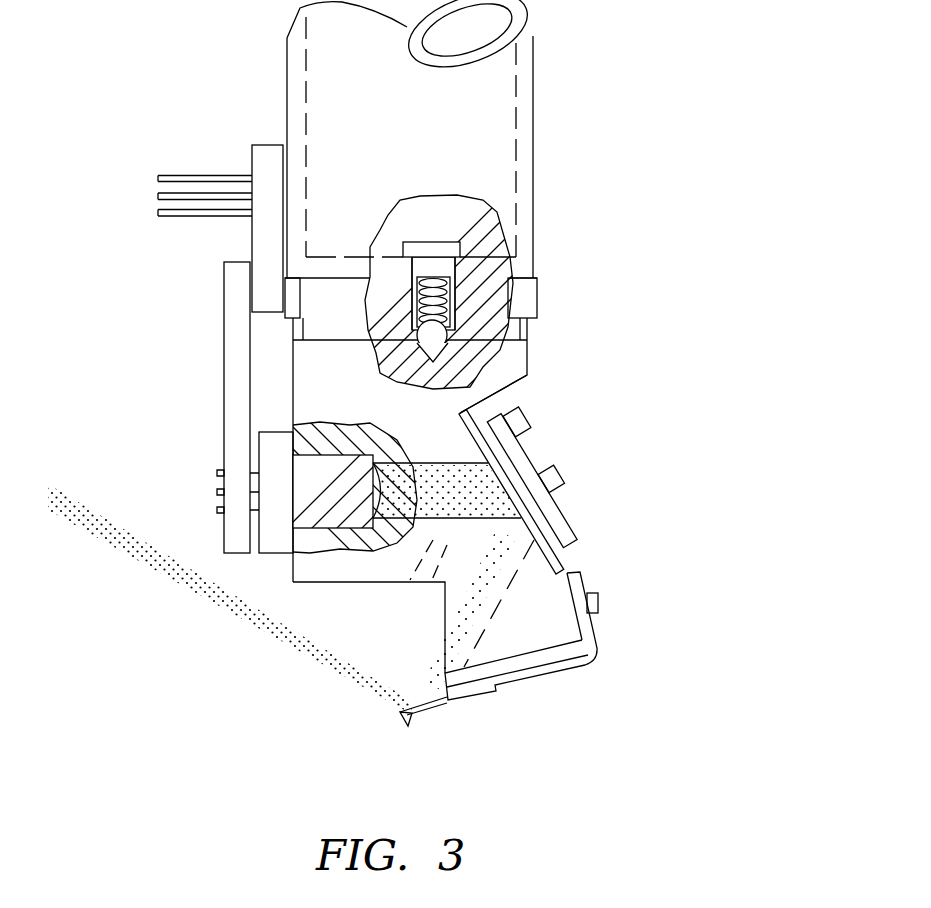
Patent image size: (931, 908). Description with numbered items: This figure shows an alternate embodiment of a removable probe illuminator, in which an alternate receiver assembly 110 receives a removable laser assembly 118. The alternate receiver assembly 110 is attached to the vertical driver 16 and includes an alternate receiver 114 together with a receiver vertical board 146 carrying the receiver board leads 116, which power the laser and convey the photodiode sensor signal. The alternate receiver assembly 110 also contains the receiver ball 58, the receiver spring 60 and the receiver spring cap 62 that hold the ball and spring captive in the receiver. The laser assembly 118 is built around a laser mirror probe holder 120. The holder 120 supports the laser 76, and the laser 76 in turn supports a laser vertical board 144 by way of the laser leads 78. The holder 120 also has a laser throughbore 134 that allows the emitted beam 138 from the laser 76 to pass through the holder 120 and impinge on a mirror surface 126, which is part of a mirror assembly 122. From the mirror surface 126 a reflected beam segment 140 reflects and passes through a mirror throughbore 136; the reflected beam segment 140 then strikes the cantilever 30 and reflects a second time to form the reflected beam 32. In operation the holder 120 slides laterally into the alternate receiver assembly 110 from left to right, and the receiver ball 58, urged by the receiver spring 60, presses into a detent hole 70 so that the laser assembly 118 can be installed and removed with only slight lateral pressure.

The vertical driver 16 is at (537, 122).
The cantilever 30 is at (400, 713).
The reflected beam 32 is at (282, 630).
The receiver ball 58 is at (447, 330).
The receiver spring 60 is at (453, 300).
The receiver spring cap 62 is at (467, 250).
The detent hole 70 is at (445, 351).
The laser 76 is at (272, 448).
The laser leads 78 is at (147, 438).
The alternate receiver assembly 110 is at (555, 268).
The alternate receiver 114 is at (537, 284).
The receiver board leads 116 is at (98, 170).
The laser assembly 118 is at (683, 453).
The laser mirror probe holder 120 is at (507, 392).
The mirror assembly 122 is at (588, 528).
The mirror surface 126 is at (552, 522).
The laser throughbore 134 is at (413, 578).
The mirror throughbore 136 is at (492, 617).
The emitted beam 138 is at (467, 492).
The reflected beam segment 140 is at (428, 673).
The laser vertical board 144 is at (224, 279).
The receiver vertical board 146 is at (252, 157).